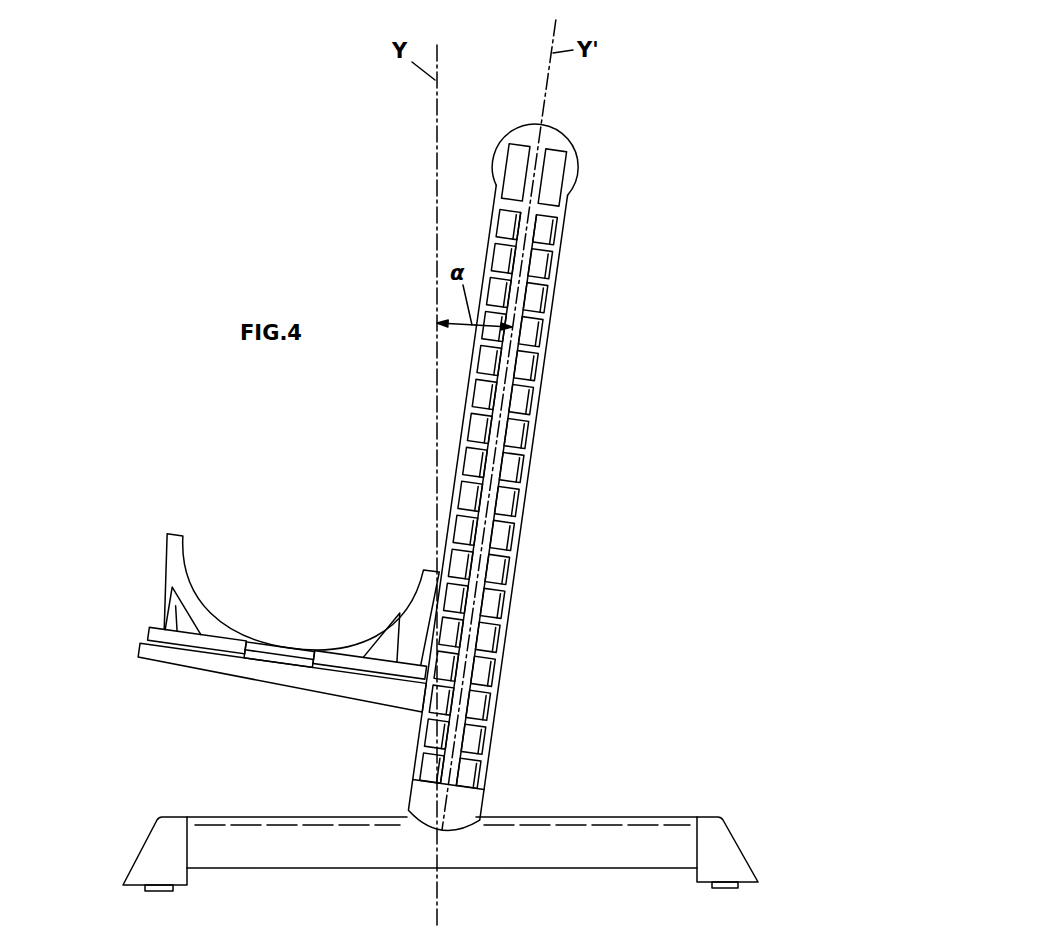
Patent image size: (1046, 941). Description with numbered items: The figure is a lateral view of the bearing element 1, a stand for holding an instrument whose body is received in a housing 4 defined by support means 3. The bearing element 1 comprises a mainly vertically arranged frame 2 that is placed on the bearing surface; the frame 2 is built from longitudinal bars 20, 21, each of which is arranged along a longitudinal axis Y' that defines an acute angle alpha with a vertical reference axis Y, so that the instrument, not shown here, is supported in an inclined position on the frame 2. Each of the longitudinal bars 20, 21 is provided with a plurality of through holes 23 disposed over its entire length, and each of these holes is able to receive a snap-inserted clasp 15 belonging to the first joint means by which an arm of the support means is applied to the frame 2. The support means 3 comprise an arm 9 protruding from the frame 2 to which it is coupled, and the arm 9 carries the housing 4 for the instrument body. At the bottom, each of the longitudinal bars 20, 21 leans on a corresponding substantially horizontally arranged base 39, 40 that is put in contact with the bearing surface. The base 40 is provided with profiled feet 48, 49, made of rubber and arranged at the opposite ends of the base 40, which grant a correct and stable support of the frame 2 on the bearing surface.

The bearing element 1 is at (638, 120).
The frame 2 is at (462, 787).
The support means 3 is at (127, 596).
The housing 4 is at (289, 628).
The arm 9 is at (190, 657).
The clasp 15 is at (477, 707).
The longitudinal bar 20 is at (553, 213).
The longitudinal bar 21 is at (553, 213).
The through holes 23 is at (527, 594).
The base 39 is at (607, 847).
The base 40 is at (607, 847).
The profiled foot 48 is at (165, 852).
The profiled foot 49 is at (720, 853).